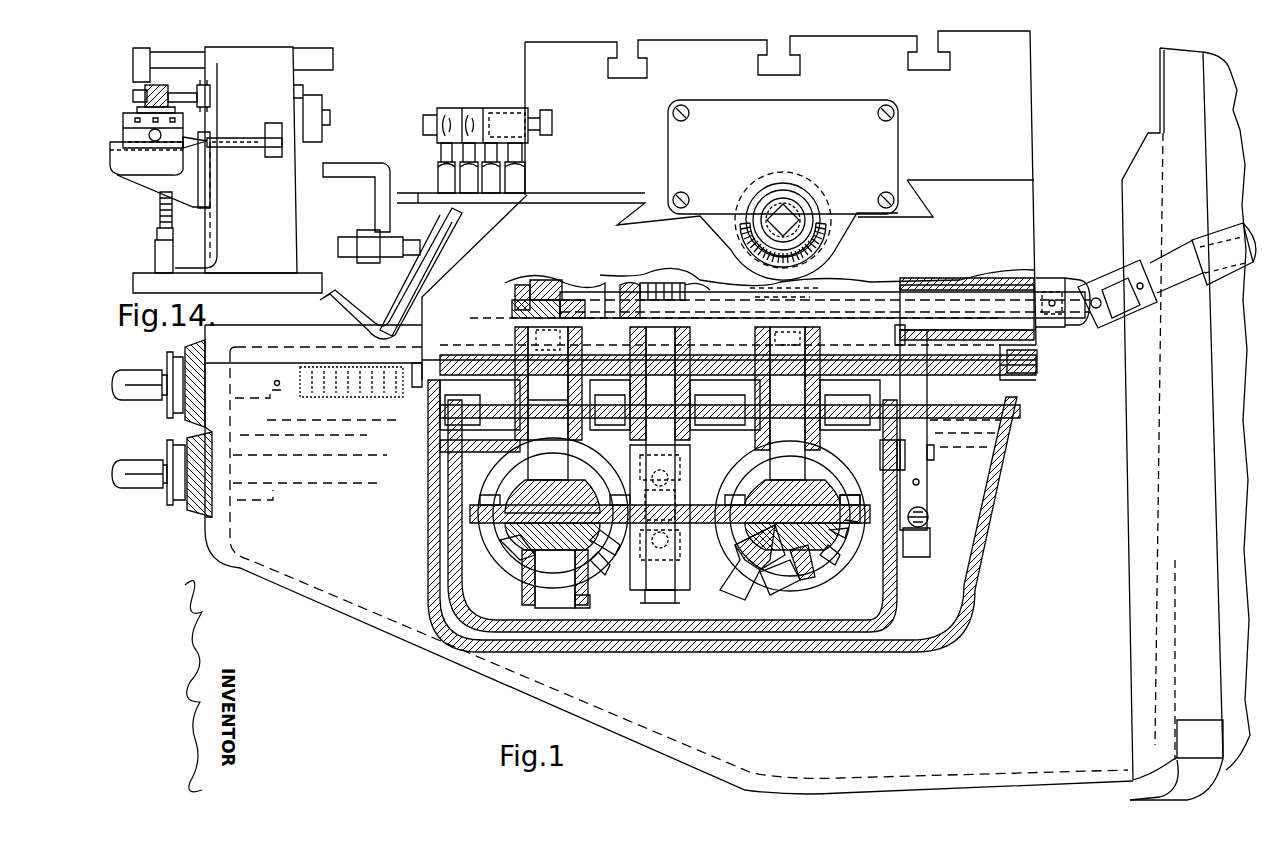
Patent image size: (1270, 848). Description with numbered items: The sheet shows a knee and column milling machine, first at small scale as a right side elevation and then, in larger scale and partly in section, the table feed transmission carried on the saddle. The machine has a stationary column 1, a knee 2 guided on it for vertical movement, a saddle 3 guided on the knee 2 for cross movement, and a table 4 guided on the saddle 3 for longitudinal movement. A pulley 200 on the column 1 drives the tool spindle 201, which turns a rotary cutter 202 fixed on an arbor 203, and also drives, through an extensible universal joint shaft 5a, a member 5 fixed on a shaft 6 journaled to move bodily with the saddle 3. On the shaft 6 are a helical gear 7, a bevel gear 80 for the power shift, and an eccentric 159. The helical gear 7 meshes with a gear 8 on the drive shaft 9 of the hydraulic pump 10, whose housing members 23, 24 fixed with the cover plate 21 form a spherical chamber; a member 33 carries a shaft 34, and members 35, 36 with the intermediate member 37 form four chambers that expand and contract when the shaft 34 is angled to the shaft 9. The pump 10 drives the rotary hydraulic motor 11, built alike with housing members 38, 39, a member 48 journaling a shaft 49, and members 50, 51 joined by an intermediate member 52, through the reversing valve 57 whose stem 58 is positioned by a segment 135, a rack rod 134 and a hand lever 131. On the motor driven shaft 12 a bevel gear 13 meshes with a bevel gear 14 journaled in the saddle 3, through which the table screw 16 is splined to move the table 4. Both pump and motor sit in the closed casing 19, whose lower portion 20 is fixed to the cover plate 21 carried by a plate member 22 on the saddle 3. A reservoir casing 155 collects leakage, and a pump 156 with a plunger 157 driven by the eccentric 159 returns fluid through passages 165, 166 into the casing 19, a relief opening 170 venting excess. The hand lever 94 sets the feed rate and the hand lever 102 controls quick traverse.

In FIG. 14, the column 1 is at (285, 200).
In FIG. 1, the column 1 is at (1238, 418).
In FIG. 14, the knee 2 is at (155, 190).
In FIG. 1, the knee 2 is at (415, 635).
In FIG. 14, the saddle 3 is at (123, 136).
In FIG. 1, the saddle 3 is at (1034, 230).
In FIG. 14, the table 4 is at (135, 108).
In FIG. 1, the table 4 is at (1033, 113).
In FIG. 14, the drive member 5 is at (188, 155).
In FIG. 1, the drive member 5 is at (1055, 283).
In FIG. 14, the extensible universal joint shaft 5a is at (228, 150).
In FIG. 1, the extensible universal joint shaft 5a is at (1130, 320).
In FIG. 1, the shaft 6 is at (875, 300).
In FIG. 1, the helical gear 7 is at (548, 280).
In FIG. 1, the gear 8 is at (572, 302).
In FIG. 1, the pump drive shaft 9 is at (530, 440).
In FIG. 1, the pump 10 is at (520, 585).
In FIG. 1, the rotary hydraulic motor 11 is at (840, 560).
In FIG. 1, the driven shaft 12 is at (822, 446).
In FIG. 1, the bevel gear 13 is at (812, 268).
In FIG. 1, the bevel gear 14 is at (830, 238).
In FIG. 1, the table screw 16 is at (795, 205).
In FIG. 1, the casing 19 is at (890, 614).
In FIG. 1, the lower casing portion 20 is at (898, 572).
In FIG. 1, the cover plate 21 is at (515, 420).
In FIG. 1, the plate member 22 is at (985, 366).
In FIG. 1, the pump housing member 23 is at (520, 485).
In FIG. 1, the pump housing member 24 is at (510, 540).
In FIG. 1, the ring-carrying member 33 is at (594, 570).
In FIG. 1, the pump shaft 34 is at (589, 601).
In FIG. 1, the pump member 35 is at (585, 475).
In FIG. 1, the pump member 36 is at (600, 553).
In FIG. 1, the intermediate member 37 is at (500, 562).
In FIG. 1, the motor housing member 38 is at (832, 470).
In FIG. 1, the motor housing member 39 is at (840, 535).
In FIG. 1, the motor ring-carrying member 48 is at (805, 582).
In FIG. 1, the motor shaft 49 is at (745, 600).
In FIG. 1, the motor member 50 is at (838, 490).
In FIG. 1, the motor member 51 is at (832, 575).
In FIG. 1, the motor intermediate member 52 is at (860, 502).
In FIG. 1, the reversing valve 57 is at (648, 588).
In FIG. 1, the valve stem 58 is at (672, 418).
In FIG. 1, the bevel gear 80 is at (522, 283).
In FIG. 1, the hand lever 94 is at (338, 300).
In FIG. 1, the hand lever 102 is at (345, 238).
In FIG. 1, the hand lever 131 is at (338, 162).
In FIG. 1, the rod 134 is at (635, 283).
In FIG. 1, the segment 135 is at (690, 285).
In FIG. 14, the reservoir casing 155 is at (140, 163).
In FIG. 1, the reservoir casing 155 is at (430, 578).
In FIG. 1, the pump 156 is at (930, 482).
In FIG. 1, the plunger 157 is at (888, 332).
In FIG. 1, the eccentric 159 is at (920, 298).
In FIG. 1, the passage 165 is at (922, 545).
In FIG. 1, the passage 166 is at (866, 546).
In FIG. 1, the opening 170 is at (920, 485).
In FIG. 14, the pulley 200 is at (320, 98).
In FIG. 14, the tool spindle 201 is at (210, 88).
In FIG. 14, the rotary cutter 202 is at (155, 80).
In FIG. 14, the arbor 203 is at (185, 100).